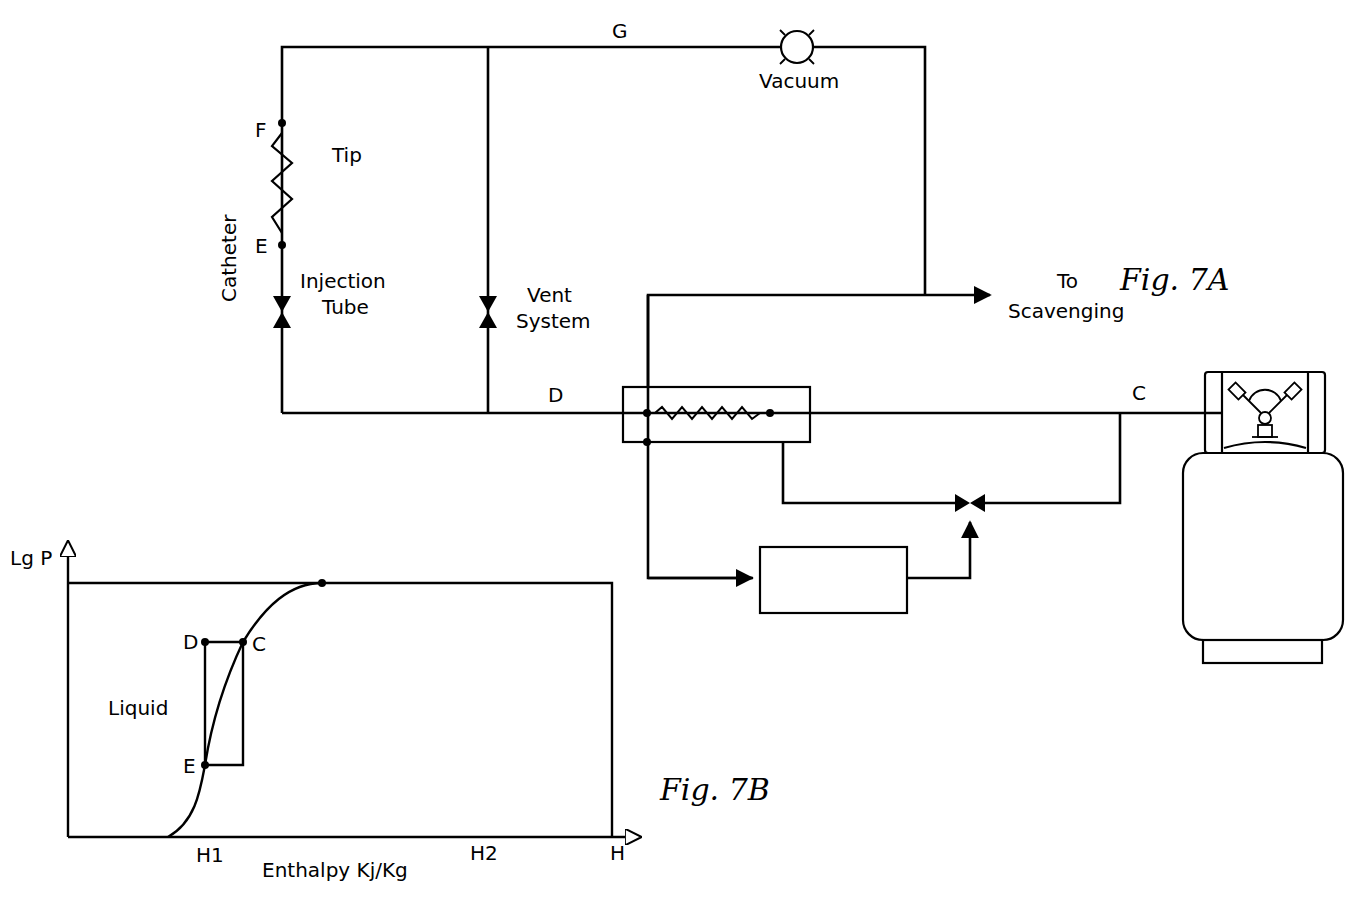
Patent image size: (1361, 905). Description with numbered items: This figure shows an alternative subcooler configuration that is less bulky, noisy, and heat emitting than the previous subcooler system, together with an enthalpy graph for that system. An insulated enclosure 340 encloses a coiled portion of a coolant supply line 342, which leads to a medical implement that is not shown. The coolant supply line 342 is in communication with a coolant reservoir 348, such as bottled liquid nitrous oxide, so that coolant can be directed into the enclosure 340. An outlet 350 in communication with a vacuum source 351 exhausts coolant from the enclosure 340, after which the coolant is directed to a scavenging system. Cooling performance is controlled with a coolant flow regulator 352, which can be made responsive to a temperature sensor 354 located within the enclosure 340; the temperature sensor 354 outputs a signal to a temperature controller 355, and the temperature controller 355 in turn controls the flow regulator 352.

The insulated enclosure 340 is at (795, 387).
The coolant supply line 342 is at (719, 419).
The coolant reservoir 348 is at (1183, 582).
The outlet 350 is at (614, 341).
The vacuum source 351 is at (782, 54).
The coolant flow regulator 352 is at (979, 512).
The temperature sensor 354 is at (646, 444).
The temperature controller 355 is at (907, 607).